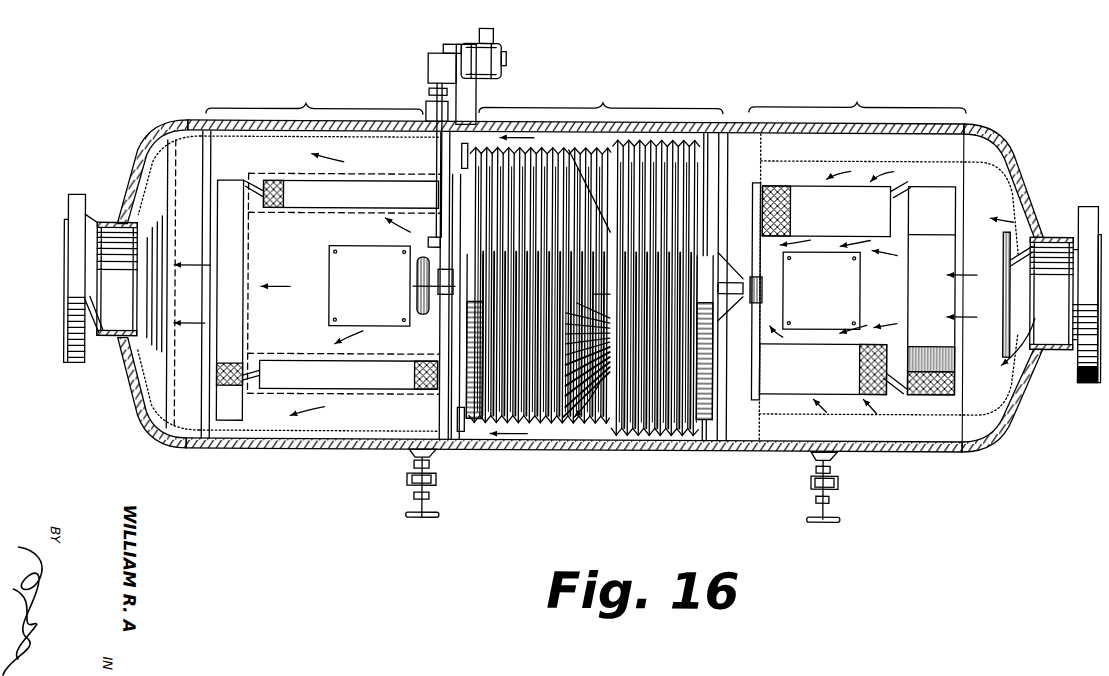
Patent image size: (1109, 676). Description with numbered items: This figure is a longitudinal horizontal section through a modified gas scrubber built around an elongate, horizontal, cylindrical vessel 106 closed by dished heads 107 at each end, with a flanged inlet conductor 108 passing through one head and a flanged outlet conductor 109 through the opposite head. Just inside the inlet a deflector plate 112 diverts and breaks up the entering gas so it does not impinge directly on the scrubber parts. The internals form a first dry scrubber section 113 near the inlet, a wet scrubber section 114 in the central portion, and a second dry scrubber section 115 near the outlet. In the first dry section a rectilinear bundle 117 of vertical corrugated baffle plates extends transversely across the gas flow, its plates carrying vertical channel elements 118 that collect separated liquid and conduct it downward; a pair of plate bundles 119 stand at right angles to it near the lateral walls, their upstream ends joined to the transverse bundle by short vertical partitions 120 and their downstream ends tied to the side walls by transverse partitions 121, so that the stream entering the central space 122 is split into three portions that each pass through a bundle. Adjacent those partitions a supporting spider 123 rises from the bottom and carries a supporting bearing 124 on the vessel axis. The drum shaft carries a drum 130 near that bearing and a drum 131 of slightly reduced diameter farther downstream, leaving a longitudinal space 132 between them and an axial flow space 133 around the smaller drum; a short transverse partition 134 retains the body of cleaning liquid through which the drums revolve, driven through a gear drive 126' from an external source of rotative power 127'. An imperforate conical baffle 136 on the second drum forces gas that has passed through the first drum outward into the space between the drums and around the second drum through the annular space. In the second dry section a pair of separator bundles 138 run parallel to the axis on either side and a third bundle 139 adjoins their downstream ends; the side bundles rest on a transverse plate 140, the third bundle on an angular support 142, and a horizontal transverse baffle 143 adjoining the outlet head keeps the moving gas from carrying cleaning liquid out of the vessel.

The vessel 106 is at (688, 437).
The dished heads 107 is at (138, 163).
The flanged inlet conductor 108 is at (1088, 202).
The flanged outlet conductor 109 is at (88, 168).
The deflector plate 112 is at (1003, 252).
The first dry scrubber section 113 is at (857, 97).
The wet scrubber section 114 is at (601, 97).
The second dry scrubber section 115 is at (314, 98).
The rectilinear bundle 117 is at (942, 205).
The channel elements 118 is at (915, 372).
The plate bundles 119 is at (824, 290).
The short vertical partitions 120 is at (896, 192).
The transverse partitions 121 is at (762, 426).
The central space 122 is at (821, 290).
The supporting spider 123 is at (756, 186).
The supporting bearing 124 is at (447, 340).
The gear drive 126' is at (392, 286).
The external source of rotative power 127' is at (488, 138).
The drum 130 is at (636, 432).
The drum 131 is at (535, 425).
The longitudinal space 132 is at (598, 430).
The axial flow space 133 is at (488, 440).
The short transverse partition 134 is at (728, 416).
The conical baffle 136 is at (575, 151).
The separator bundles 138 is at (348, 284).
The third bundle 139 is at (233, 243).
The transverse plate 140 is at (300, 420).
The angular support 142 is at (230, 414).
The baffle 143 is at (188, 412).